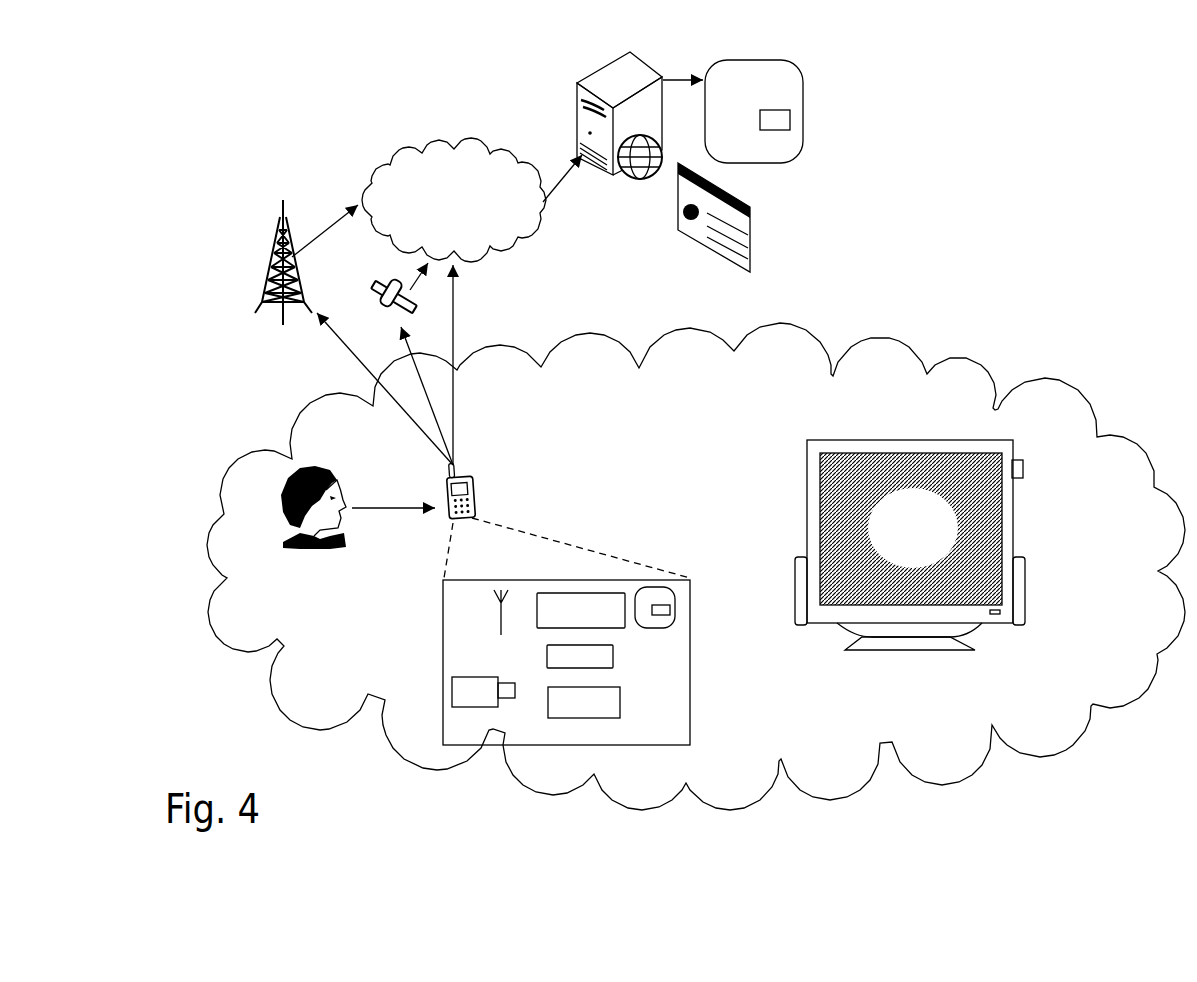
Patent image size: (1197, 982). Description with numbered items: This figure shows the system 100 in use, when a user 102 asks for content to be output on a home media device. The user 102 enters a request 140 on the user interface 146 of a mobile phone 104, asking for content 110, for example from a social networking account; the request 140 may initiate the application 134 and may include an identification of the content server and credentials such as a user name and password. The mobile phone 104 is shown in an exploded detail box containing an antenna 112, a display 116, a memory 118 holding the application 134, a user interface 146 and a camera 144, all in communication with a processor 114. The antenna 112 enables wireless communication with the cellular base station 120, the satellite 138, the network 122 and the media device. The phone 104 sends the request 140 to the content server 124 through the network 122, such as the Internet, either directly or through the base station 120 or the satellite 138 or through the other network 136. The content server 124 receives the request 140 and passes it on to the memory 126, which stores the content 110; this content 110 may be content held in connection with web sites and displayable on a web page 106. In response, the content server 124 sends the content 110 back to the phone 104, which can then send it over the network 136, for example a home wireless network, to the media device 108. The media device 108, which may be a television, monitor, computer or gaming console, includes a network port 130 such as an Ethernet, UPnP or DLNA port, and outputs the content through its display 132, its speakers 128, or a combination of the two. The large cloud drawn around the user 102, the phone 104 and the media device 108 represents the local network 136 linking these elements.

The system 100 is at (195, 91).
The user 102 is at (285, 530).
The mobile phone 104 is at (452, 522).
The web page 106 is at (750, 235).
The media device 108 is at (908, 532).
The content 110 is at (790, 115).
The antenna 112 is at (495, 628).
The processor 114 is at (537, 620).
The display 116 is at (547, 660).
The memory 118 is at (653, 627).
The cellular base station 120 is at (272, 322).
The network 122 is at (378, 158).
The content server 124 is at (602, 175).
The memory 126 is at (763, 148).
The speakers 128 is at (793, 603).
The network port 130 is at (1023, 478).
The display 132 is at (912, 493).
The application 134 is at (670, 610).
The network 136 is at (935, 354).
The satellite 138 is at (370, 283).
The request 140 is at (680, 48).
The camera 144 is at (490, 707).
The user interface 146 is at (620, 700).